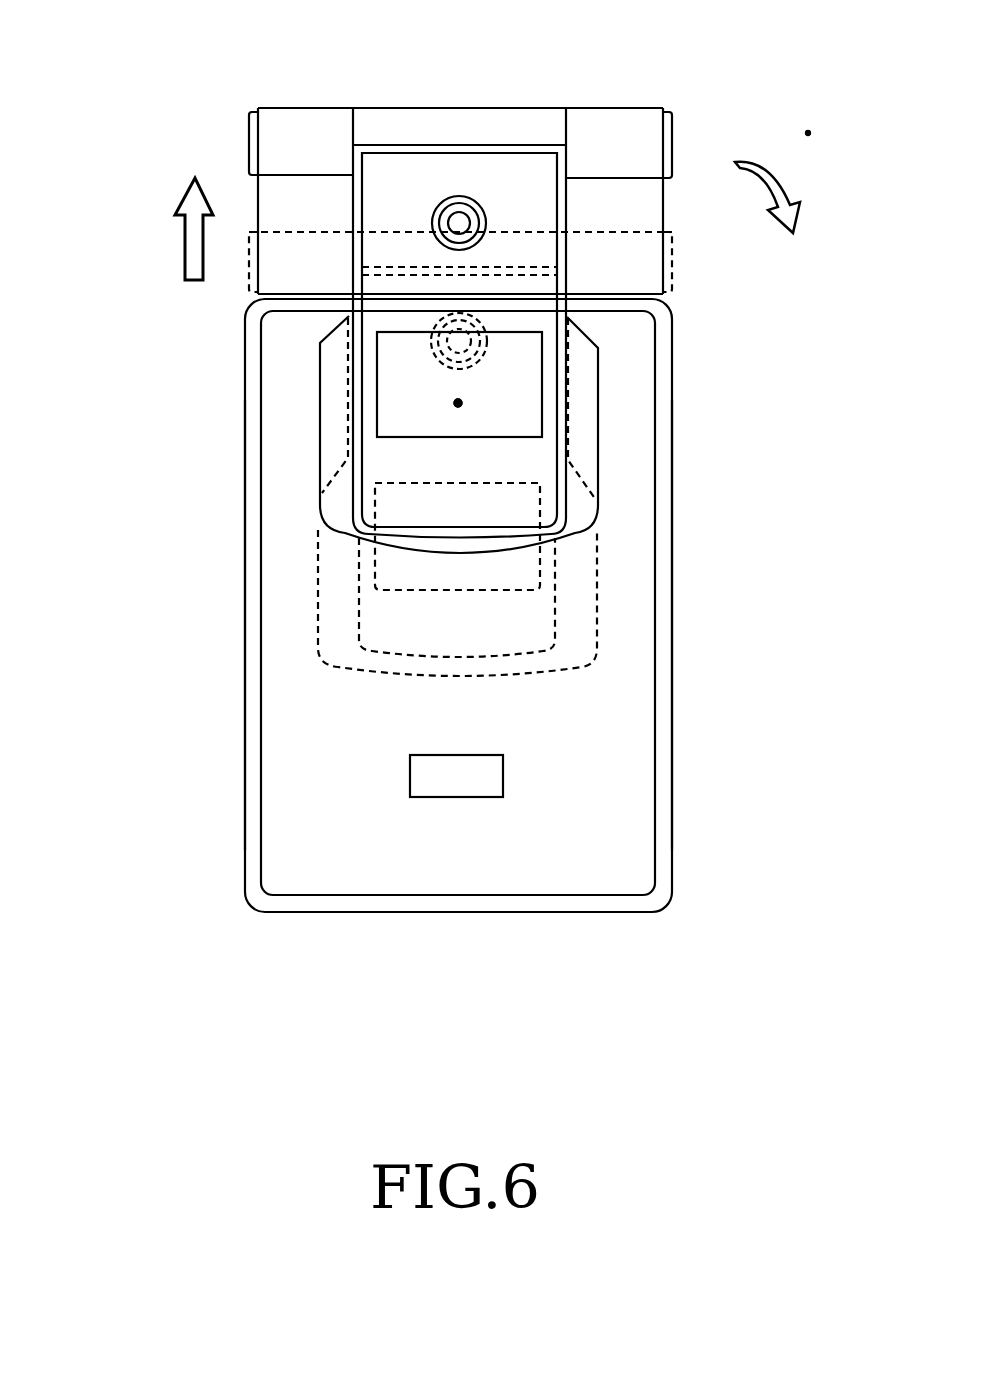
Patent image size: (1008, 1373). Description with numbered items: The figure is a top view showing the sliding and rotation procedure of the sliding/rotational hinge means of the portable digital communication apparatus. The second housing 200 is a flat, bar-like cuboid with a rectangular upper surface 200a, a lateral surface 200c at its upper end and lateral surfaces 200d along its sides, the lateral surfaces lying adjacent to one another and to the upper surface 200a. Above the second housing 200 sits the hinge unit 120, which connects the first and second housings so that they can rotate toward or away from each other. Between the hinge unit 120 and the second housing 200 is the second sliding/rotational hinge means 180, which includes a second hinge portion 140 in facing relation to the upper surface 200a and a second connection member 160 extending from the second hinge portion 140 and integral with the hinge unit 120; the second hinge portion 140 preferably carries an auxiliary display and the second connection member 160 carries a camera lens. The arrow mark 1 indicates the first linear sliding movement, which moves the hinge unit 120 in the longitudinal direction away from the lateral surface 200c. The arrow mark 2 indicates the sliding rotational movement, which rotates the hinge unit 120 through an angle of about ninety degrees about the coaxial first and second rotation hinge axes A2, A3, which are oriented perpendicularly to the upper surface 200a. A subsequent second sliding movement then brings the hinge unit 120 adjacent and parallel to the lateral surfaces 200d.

The hinge unit 120 is at (612, 104).
The second connection member 160 is at (528, 207).
The second hinge portion 140 is at (525, 467).
The first rotation hinge axis A2 is at (458, 403).
The second rotation hinge axis A3 is at (458, 403).
The second sliding/rotational hinge means 180 is at (305, 372).
The second housing 200 is at (700, 696).
The upper surface 200a is at (608, 792).
The lateral surface 200c is at (607, 297).
The lateral surface 200d is at (672, 603).
The arrow mark 1 is at (187, 245).
The arrow mark 2 is at (790, 182).